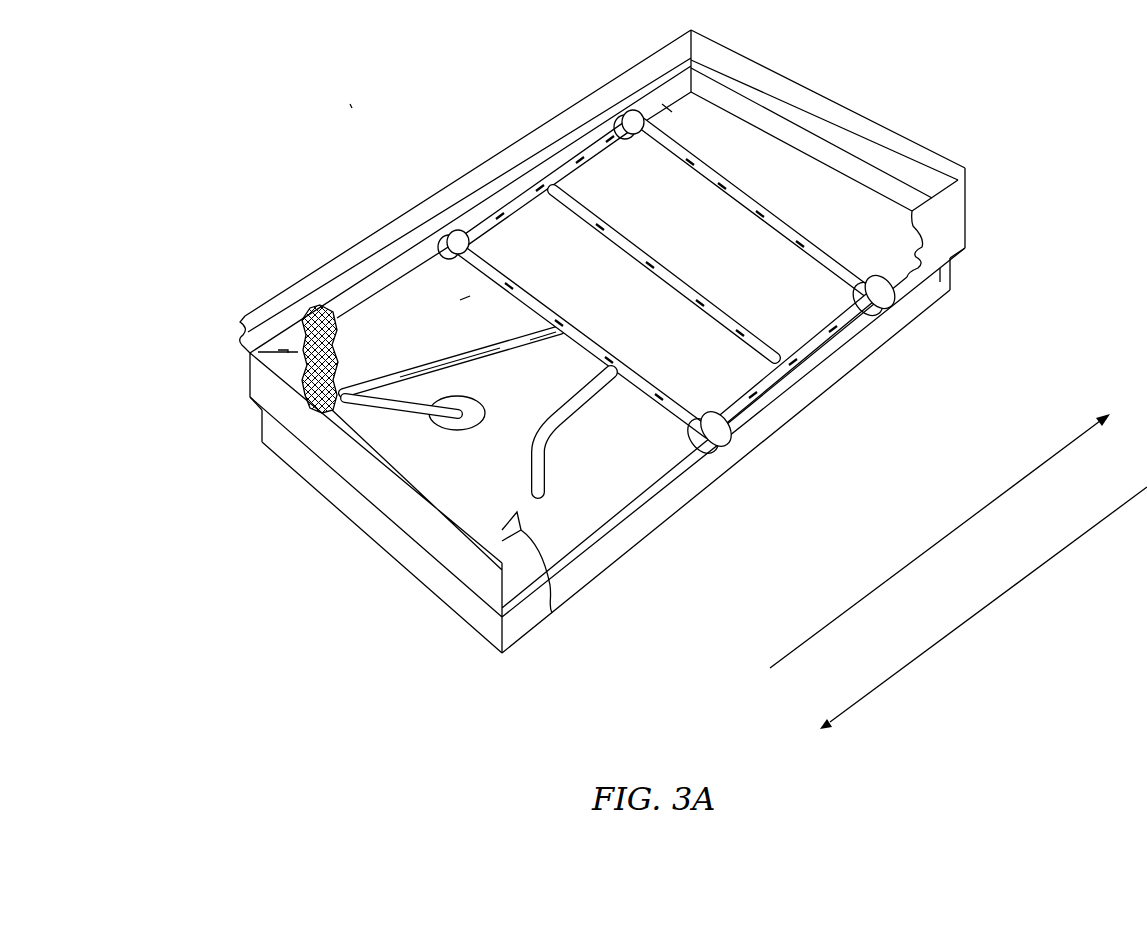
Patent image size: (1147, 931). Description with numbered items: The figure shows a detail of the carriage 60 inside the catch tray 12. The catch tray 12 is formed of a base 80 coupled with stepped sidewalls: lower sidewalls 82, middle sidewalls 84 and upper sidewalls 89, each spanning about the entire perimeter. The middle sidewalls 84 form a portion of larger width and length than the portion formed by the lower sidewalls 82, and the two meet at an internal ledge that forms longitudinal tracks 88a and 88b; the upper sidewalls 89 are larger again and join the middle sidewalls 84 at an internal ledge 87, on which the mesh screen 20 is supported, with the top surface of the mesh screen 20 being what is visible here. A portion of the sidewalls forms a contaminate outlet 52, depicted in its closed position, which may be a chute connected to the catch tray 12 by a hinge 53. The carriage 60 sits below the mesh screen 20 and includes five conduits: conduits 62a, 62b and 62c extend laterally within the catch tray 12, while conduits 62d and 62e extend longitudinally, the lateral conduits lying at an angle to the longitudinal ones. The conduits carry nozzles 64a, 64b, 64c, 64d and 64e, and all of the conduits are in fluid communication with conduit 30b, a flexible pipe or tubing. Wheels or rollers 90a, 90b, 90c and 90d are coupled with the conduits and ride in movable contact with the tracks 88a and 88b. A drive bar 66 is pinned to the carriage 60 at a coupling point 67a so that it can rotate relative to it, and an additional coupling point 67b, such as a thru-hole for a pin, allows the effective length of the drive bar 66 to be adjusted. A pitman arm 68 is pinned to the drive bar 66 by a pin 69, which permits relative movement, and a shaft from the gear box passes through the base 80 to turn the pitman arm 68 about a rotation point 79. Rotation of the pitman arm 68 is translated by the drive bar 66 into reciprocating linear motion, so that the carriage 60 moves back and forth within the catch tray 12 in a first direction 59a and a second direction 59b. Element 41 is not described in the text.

The catch tray 12 is at (346, 100).
The mesh screen 20 is at (320, 317).
The conduit 30b is at (587, 418).
The end wall 41 is at (280, 340).
The contaminate outlet 52 is at (345, 457).
The hinge 53 is at (420, 565).
The first direction 59a is at (1060, 448).
The second direction 59b is at (1047, 565).
The carriage 60 is at (500, 300).
The conduit 62a is at (788, 218).
The conduit 62b is at (680, 272).
The conduit 62c is at (555, 308).
The conduit 62d is at (827, 343).
The conduit 62e is at (603, 143).
The nozzle 64a is at (724, 181).
The nozzle 64b is at (605, 225).
The nozzle 64c is at (510, 275).
The nozzle 64d is at (807, 338).
The nozzle 64e is at (558, 180).
The drive bar 66 is at (397, 367).
The coupling point 67a is at (563, 320).
The additional coupling point 67b is at (537, 337).
The pitman arm 68 is at (415, 413).
The pin 69 is at (345, 396).
The rotation point 79 is at (470, 400).
The base 80 is at (875, 217).
The lower sidewall 82 is at (937, 292).
The middle sidewall 84 is at (957, 215).
The internal ledge 87 is at (403, 247).
The longitudinal track 88a is at (917, 272).
The longitudinal track 88b is at (670, 100).
The upper sidewall 89 is at (957, 180).
The roller 90a is at (878, 302).
The roller 90b is at (733, 432).
The roller 90c is at (620, 110).
The roller 90d is at (457, 233).